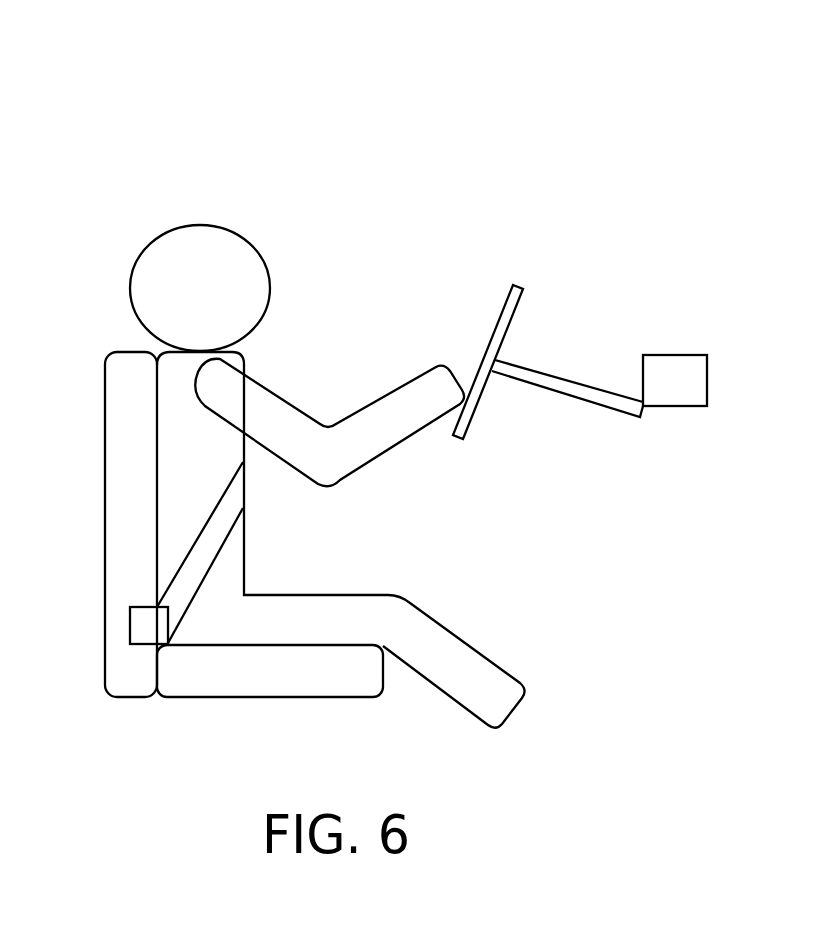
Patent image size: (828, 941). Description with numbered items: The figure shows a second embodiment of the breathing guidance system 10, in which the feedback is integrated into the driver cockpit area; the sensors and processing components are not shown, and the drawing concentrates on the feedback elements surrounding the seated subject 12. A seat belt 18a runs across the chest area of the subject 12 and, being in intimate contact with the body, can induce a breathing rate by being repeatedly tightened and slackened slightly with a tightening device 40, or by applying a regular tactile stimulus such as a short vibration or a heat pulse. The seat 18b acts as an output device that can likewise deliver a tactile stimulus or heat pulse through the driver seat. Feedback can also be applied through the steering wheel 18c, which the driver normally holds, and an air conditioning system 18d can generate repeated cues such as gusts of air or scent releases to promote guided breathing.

The system 10 is at (489, 119).
The subject 12 is at (150, 247).
The seat belt 18a is at (218, 532).
The seat 18b is at (103, 428).
The steering wheel 18c is at (523, 303).
The air conditioning system 18d is at (673, 406).
The tightening device 40 is at (128, 630).